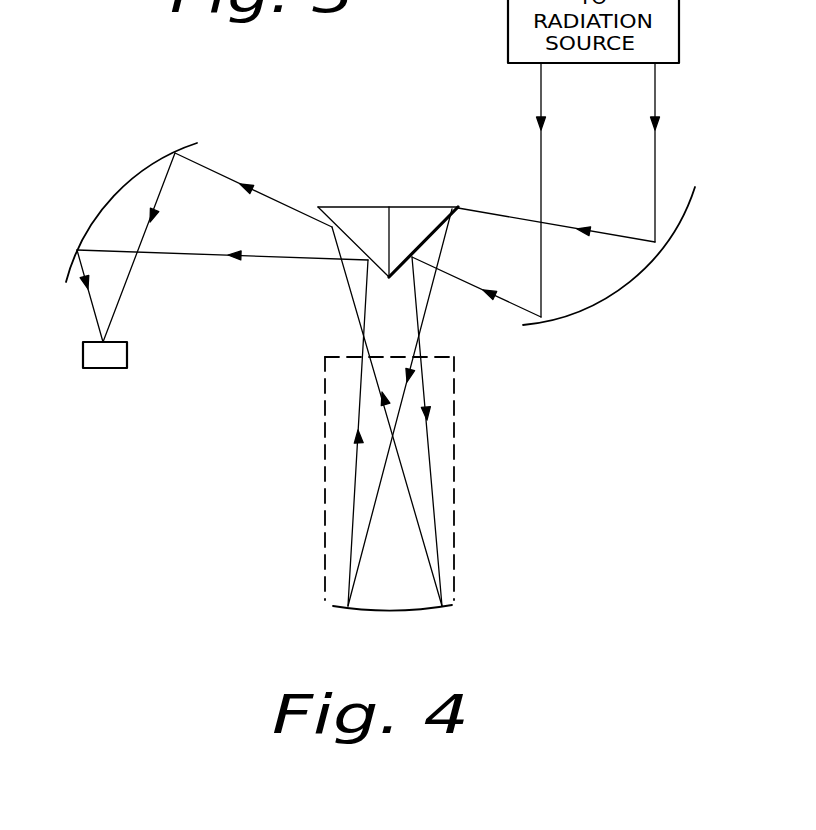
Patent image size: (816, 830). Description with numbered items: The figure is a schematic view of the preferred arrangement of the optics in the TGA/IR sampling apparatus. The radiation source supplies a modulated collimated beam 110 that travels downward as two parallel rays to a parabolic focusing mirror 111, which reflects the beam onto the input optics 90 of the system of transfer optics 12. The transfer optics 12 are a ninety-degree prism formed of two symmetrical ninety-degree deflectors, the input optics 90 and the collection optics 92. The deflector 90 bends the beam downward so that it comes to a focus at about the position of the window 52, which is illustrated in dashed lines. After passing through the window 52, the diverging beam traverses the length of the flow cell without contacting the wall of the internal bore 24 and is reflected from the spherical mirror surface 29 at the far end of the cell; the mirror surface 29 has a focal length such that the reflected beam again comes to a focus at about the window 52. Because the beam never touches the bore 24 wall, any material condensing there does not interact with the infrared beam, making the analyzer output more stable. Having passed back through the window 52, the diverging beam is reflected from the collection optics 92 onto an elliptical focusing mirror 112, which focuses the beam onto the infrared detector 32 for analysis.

The system of transfer optics 12 is at (417, 243).
The input optics 90 is at (447, 205).
The collection optics 92 is at (386, 282).
The internal bore 24 is at (350, 456).
The window 52 is at (335, 357).
The spherical mirror surface 29 is at (387, 612).
The detector 32 is at (122, 368).
The modulated collimated beam 110 is at (655, 181).
The parabolic focusing mirror 111 is at (615, 277).
The elliptical focusing mirror 112 is at (102, 210).